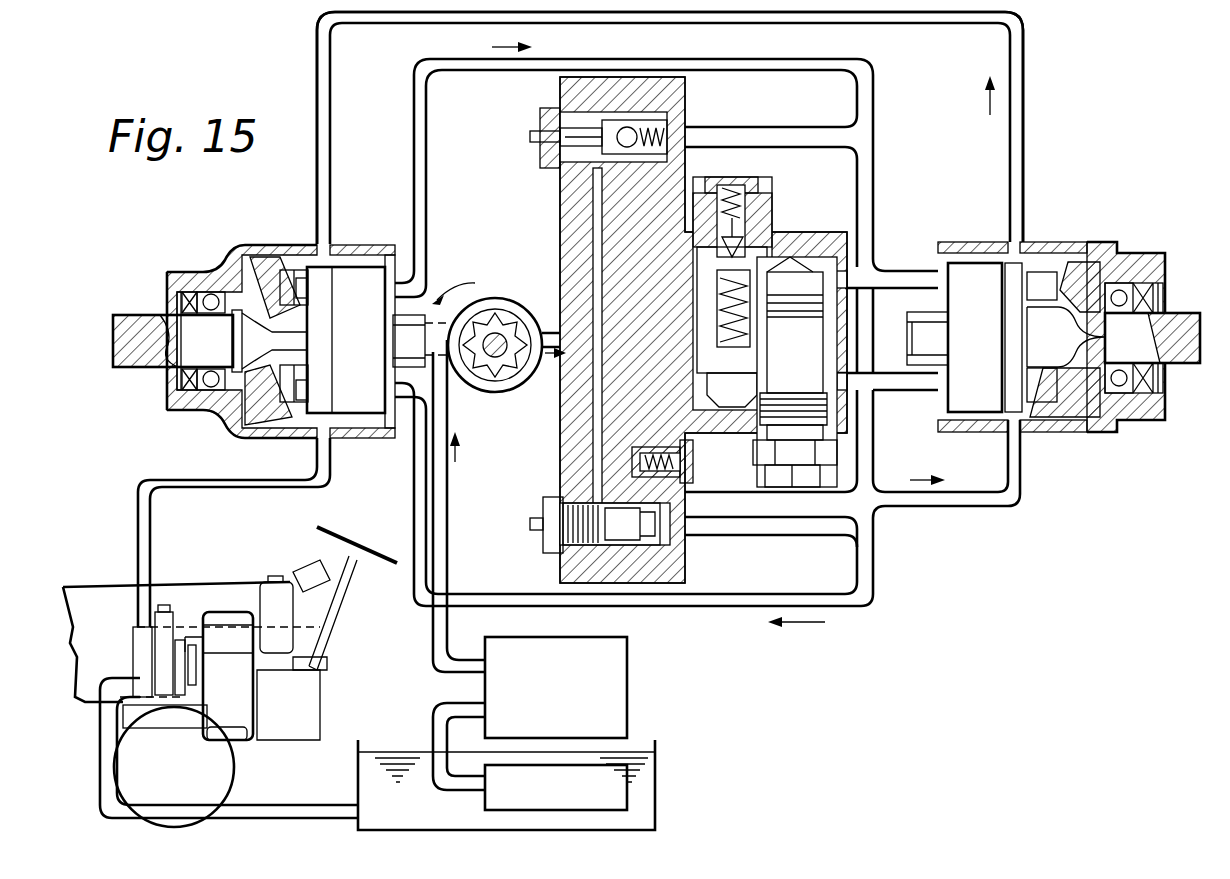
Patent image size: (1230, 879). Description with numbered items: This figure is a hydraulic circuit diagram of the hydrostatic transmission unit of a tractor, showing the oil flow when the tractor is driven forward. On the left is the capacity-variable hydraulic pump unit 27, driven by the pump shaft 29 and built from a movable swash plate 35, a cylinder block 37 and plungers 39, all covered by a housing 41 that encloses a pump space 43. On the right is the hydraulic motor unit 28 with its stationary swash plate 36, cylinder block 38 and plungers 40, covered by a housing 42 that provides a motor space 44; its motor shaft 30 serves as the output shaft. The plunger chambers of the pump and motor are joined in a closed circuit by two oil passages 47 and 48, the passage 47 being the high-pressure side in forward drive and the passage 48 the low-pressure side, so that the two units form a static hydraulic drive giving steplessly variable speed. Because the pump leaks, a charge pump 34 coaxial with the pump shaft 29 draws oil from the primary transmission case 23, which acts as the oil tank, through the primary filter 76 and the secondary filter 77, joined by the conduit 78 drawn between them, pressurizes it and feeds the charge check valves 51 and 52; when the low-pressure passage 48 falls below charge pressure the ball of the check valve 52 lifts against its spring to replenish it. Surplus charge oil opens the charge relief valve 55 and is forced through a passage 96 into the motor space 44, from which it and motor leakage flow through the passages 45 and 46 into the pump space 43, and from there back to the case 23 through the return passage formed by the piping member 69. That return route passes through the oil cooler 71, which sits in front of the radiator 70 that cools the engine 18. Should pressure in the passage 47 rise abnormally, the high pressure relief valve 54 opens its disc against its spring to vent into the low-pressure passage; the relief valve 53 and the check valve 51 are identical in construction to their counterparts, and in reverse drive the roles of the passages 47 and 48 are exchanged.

The engine 18 is at (245, 712).
The primary transmission case 23 is at (655, 781).
The hydraulic pump unit 27 is at (269, 339).
The hydraulic motor unit 28 is at (1067, 334).
The pump shaft 29 is at (160, 365).
The motor shaft 30 is at (1180, 313).
The charge pump 34 is at (509, 398).
The swash plate 35 is at (278, 272).
The swash plate 36 is at (1060, 410).
The cylinder block 37 is at (367, 267).
The cylinder block 38 is at (982, 263).
The plunger 39 is at (315, 408).
The plunger 40 is at (1032, 272).
The housing 41 is at (220, 424).
The housing 42 is at (1135, 253).
The pump space 43 is at (263, 440).
The motor space 44 is at (1010, 412).
The passage 45 is at (706, 27).
The passage 46 is at (670, 128).
The oil passage 47 is at (617, 60).
The oil passage 48 is at (719, 607).
The charge check valve 51 is at (532, 160).
The charge check valve 52 is at (540, 524).
The high pressure relief valve 53 is at (760, 198).
The high pressure relief valve 54 is at (762, 462).
The charge relief valve 55 is at (693, 451).
The piping member 69 is at (150, 527).
The radiator 70 is at (170, 615).
The oil cooler 71 is at (133, 657).
The primary filter 76 is at (556, 787).
The secondary filter 77 is at (556, 687).
The conduit 78 is at (434, 708).
The passage 96 is at (958, 504).